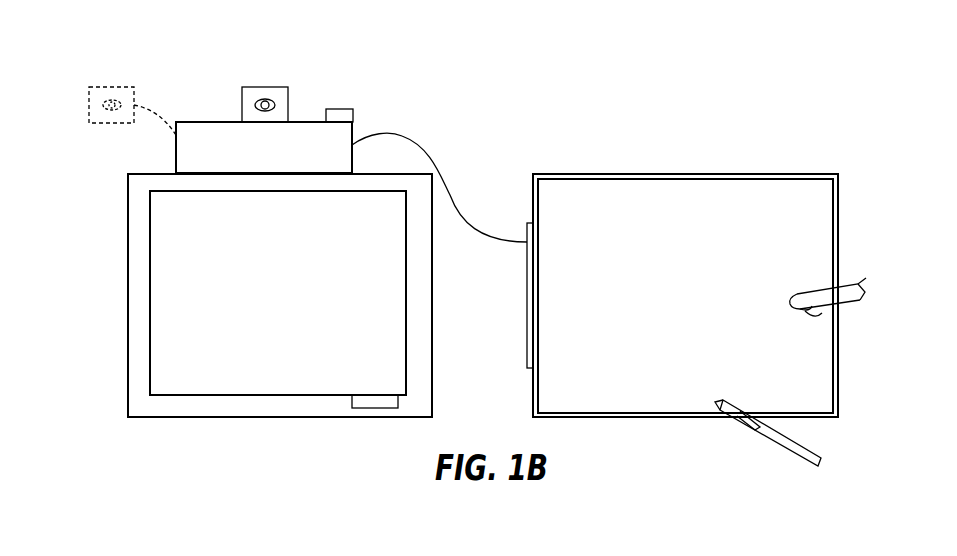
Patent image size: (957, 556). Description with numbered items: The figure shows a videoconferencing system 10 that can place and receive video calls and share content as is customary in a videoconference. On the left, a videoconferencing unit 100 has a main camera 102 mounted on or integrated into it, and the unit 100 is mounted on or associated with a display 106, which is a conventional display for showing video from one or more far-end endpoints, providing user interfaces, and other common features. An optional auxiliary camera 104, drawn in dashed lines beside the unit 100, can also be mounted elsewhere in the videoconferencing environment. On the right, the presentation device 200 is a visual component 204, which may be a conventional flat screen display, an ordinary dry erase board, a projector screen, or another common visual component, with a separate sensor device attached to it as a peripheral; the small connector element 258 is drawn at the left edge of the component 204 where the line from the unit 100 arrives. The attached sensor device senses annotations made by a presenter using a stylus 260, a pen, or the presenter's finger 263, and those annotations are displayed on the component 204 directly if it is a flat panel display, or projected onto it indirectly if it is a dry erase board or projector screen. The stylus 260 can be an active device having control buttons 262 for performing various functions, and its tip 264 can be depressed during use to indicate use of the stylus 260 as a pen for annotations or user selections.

The videoconferencing system 10 is at (157, 27).
The videoconferencing unit 100 is at (176, 152).
The main camera 102 is at (280, 87).
The auxiliary camera 104 is at (110, 86).
The display 106 is at (128, 280).
The presentation device 200 is at (604, 150).
The visual component 204 is at (778, 200).
The connector port 258 is at (527, 333).
The stylus 260 is at (775, 454).
The control buttons 262 is at (770, 433).
The presenter's finger 263 is at (822, 312).
The tip 264 is at (718, 398).